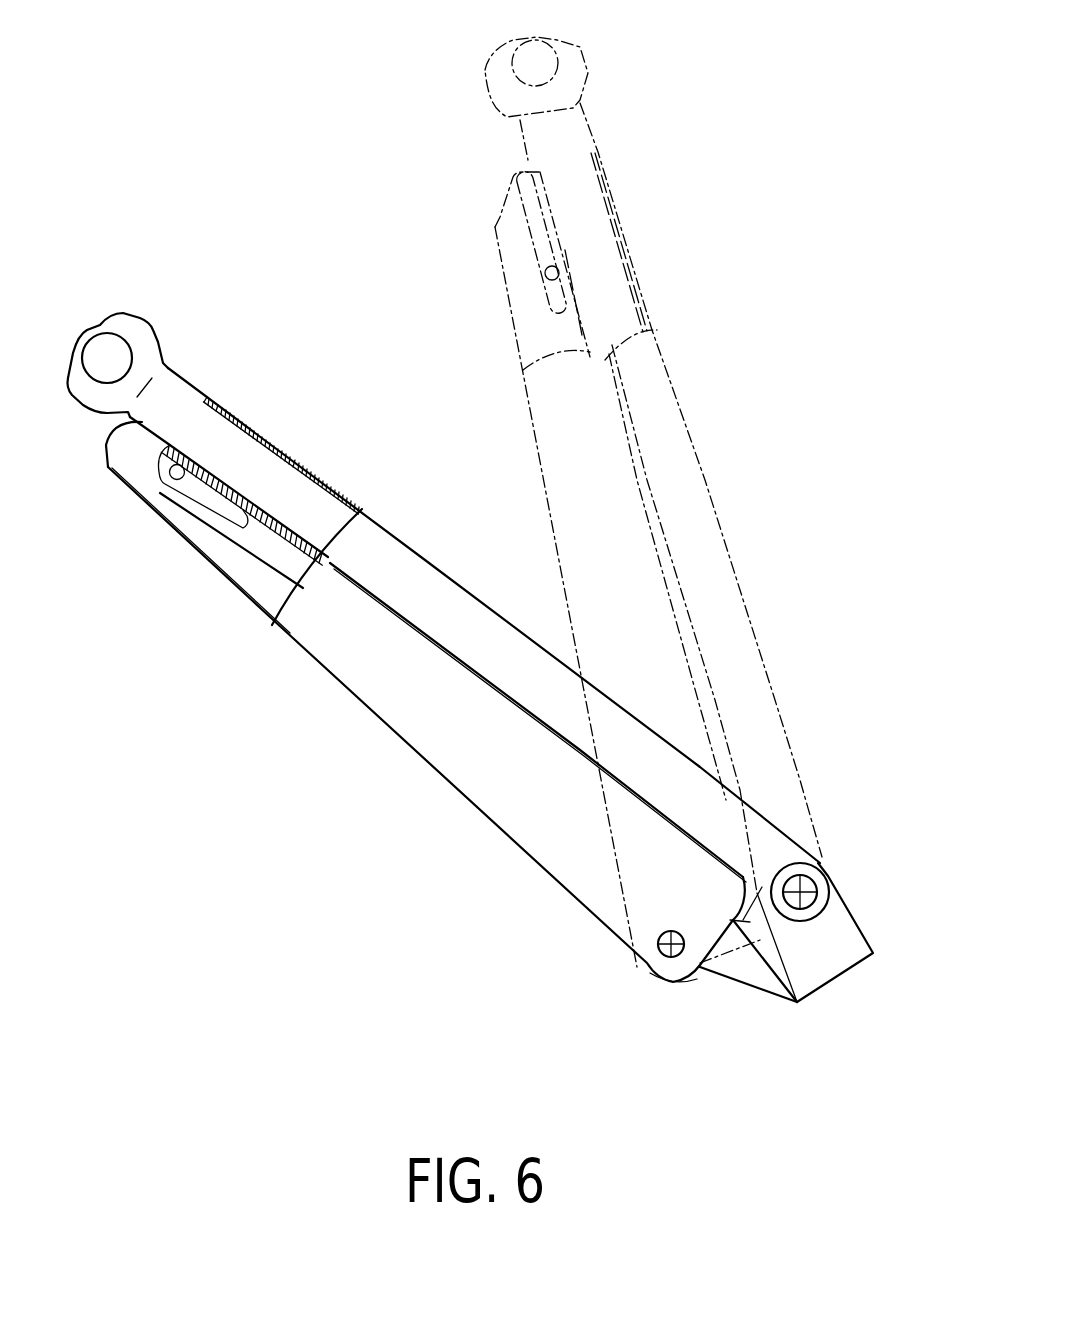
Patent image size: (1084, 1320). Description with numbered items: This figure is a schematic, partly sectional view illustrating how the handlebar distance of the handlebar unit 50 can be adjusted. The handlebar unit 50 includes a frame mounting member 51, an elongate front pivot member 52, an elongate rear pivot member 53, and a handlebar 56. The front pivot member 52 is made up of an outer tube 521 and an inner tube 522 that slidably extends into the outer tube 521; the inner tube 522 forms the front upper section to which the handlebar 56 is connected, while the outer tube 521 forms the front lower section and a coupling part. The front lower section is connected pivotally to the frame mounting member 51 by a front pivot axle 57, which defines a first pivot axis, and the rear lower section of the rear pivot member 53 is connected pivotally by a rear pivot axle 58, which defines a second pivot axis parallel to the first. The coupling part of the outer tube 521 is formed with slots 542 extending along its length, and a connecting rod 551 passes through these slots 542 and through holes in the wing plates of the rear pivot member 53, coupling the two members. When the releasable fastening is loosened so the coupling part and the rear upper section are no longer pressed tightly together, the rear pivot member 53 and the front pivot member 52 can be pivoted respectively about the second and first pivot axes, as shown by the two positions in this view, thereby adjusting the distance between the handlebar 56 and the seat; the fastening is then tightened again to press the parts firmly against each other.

The handlebar unit 50 is at (445, 505).
The frame mounting member 51 is at (846, 970).
The front pivot member 52 is at (397, 535).
The rear pivot member 53 is at (317, 668).
The handlebar 56 is at (110, 352).
The front pivot axle 57 is at (793, 900).
The rear pivot axle 58 is at (667, 950).
The outer tube 521 is at (404, 359).
The inner tube 522 is at (233, 430).
The slots 542 is at (207, 503).
The connecting rod 551 is at (170, 479).